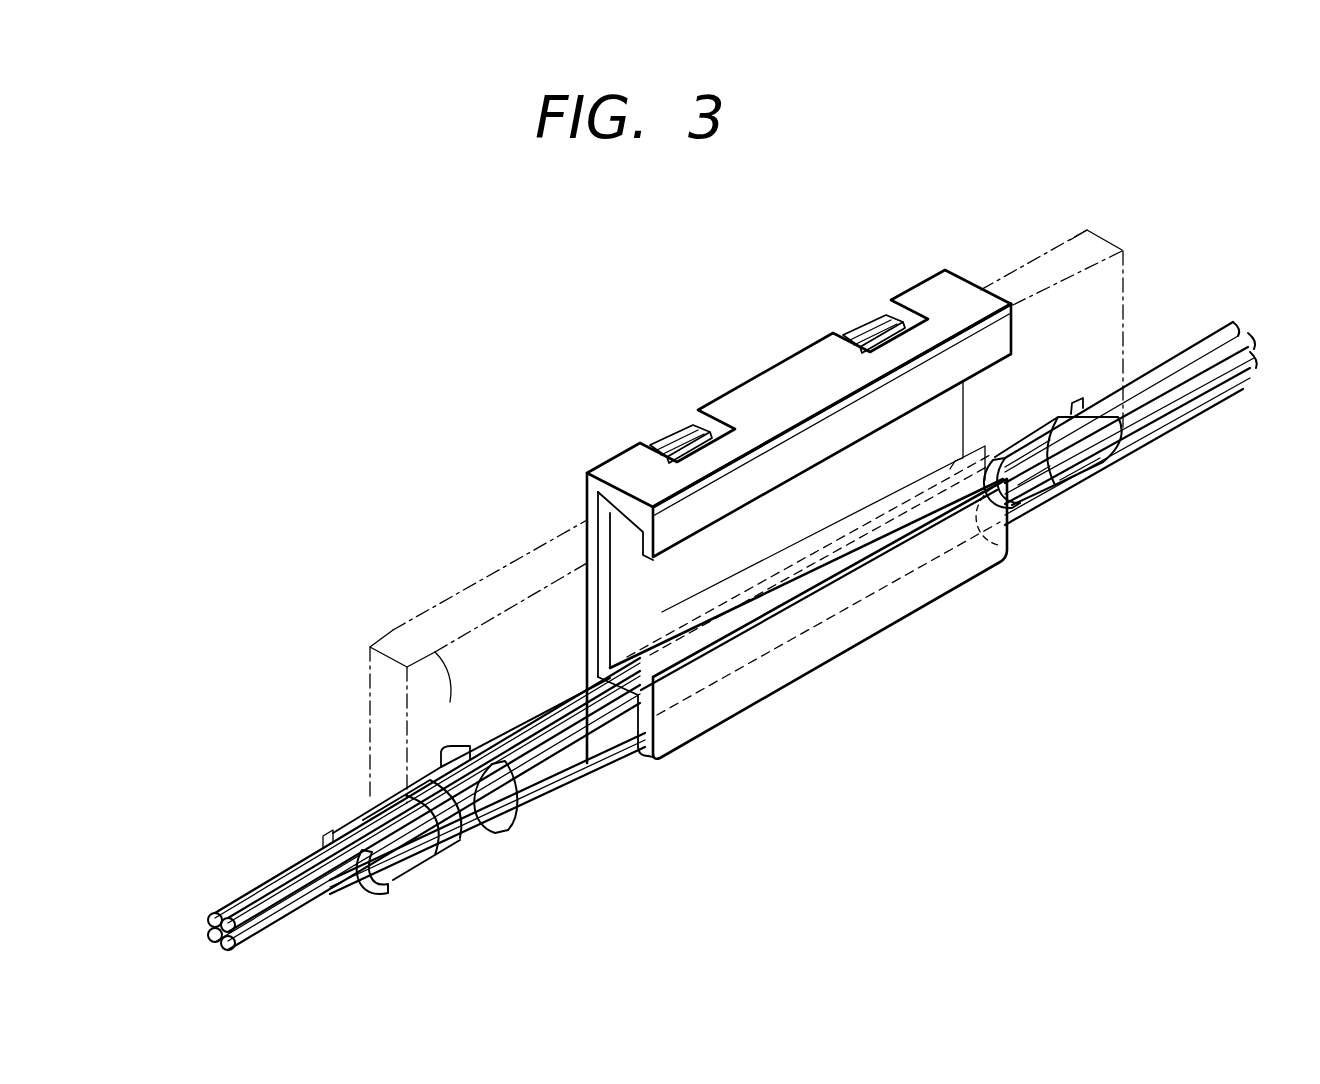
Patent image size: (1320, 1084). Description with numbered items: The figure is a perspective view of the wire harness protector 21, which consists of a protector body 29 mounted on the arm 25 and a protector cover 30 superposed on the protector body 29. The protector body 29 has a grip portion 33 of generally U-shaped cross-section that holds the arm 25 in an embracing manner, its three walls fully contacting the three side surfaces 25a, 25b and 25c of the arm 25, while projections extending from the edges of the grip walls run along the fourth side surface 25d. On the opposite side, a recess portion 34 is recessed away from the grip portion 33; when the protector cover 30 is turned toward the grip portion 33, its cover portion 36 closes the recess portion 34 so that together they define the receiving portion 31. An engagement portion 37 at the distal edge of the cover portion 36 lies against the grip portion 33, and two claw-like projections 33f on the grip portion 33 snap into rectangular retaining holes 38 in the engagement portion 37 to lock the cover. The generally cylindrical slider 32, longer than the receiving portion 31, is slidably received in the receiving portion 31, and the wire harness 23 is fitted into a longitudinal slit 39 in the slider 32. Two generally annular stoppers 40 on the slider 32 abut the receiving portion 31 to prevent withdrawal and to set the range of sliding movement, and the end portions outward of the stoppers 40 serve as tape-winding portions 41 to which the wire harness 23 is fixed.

The wire harness protector 21 is at (742, 338).
The wire harness 23 is at (308, 858).
The arm 25 is at (1042, 272).
The side surface 25a is at (470, 588).
The side surface 25b is at (360, 665).
The side surface 25c is at (367, 802).
The side surface 25d is at (392, 630).
The protector body 29 is at (938, 424).
The protector cover 30 is at (538, 400).
The receiving portion 31 is at (640, 745).
The slider 32 is at (553, 763).
The grip portion 33 is at (670, 602).
The claw-like projections 33f is at (694, 446).
The recess portion 34 is at (885, 612).
The cover portion 36 is at (592, 511).
The engagement portion 37 is at (612, 467).
The retaining holes 38 is at (677, 460).
The slit 39 is at (1073, 404).
The stoppers 40 is at (513, 805).
The tape-winding portions 41 is at (385, 866).